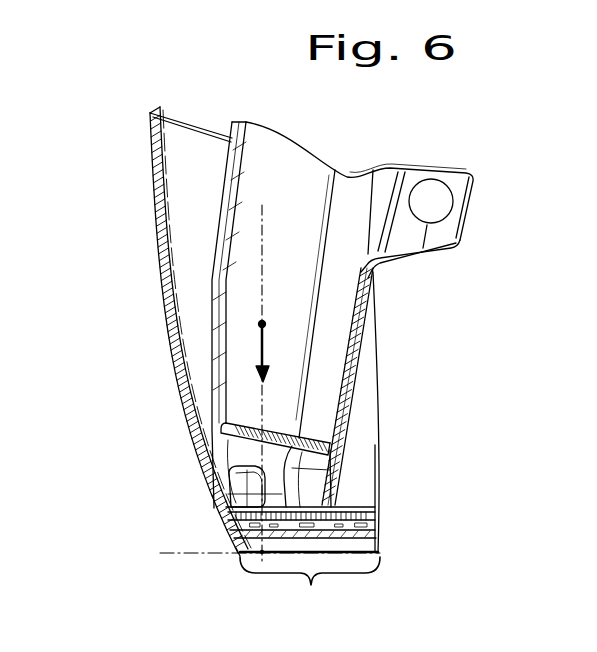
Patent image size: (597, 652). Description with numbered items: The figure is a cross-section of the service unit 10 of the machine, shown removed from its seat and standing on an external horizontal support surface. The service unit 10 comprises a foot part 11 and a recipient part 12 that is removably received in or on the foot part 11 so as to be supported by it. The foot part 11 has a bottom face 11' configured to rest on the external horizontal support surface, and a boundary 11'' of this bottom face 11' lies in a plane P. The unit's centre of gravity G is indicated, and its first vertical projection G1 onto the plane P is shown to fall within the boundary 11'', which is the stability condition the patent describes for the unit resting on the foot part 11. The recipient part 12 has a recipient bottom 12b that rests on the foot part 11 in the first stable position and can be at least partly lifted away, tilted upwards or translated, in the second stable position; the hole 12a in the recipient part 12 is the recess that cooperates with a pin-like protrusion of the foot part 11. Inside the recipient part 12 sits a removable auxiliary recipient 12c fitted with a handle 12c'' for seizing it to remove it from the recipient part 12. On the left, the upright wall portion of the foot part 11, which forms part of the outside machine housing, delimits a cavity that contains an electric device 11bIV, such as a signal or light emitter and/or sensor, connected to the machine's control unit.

The service unit 10 is at (97, 132).
The electric device 11bIV is at (170, 322).
The recipient part 12 is at (372, 300).
The auxiliary recipient 12c is at (359, 214).
The handle 12c'' is at (459, 169).
The centre of gravity G is at (259, 321).
The hole 12a is at (245, 498).
The recipient bottom 12b is at (311, 505).
The foot part 11 is at (338, 528).
The first vertical projection G1 is at (260, 553).
The plane P is at (196, 553).
The boundary 11'' is at (193, 581).
The bottom face 11' is at (310, 601).